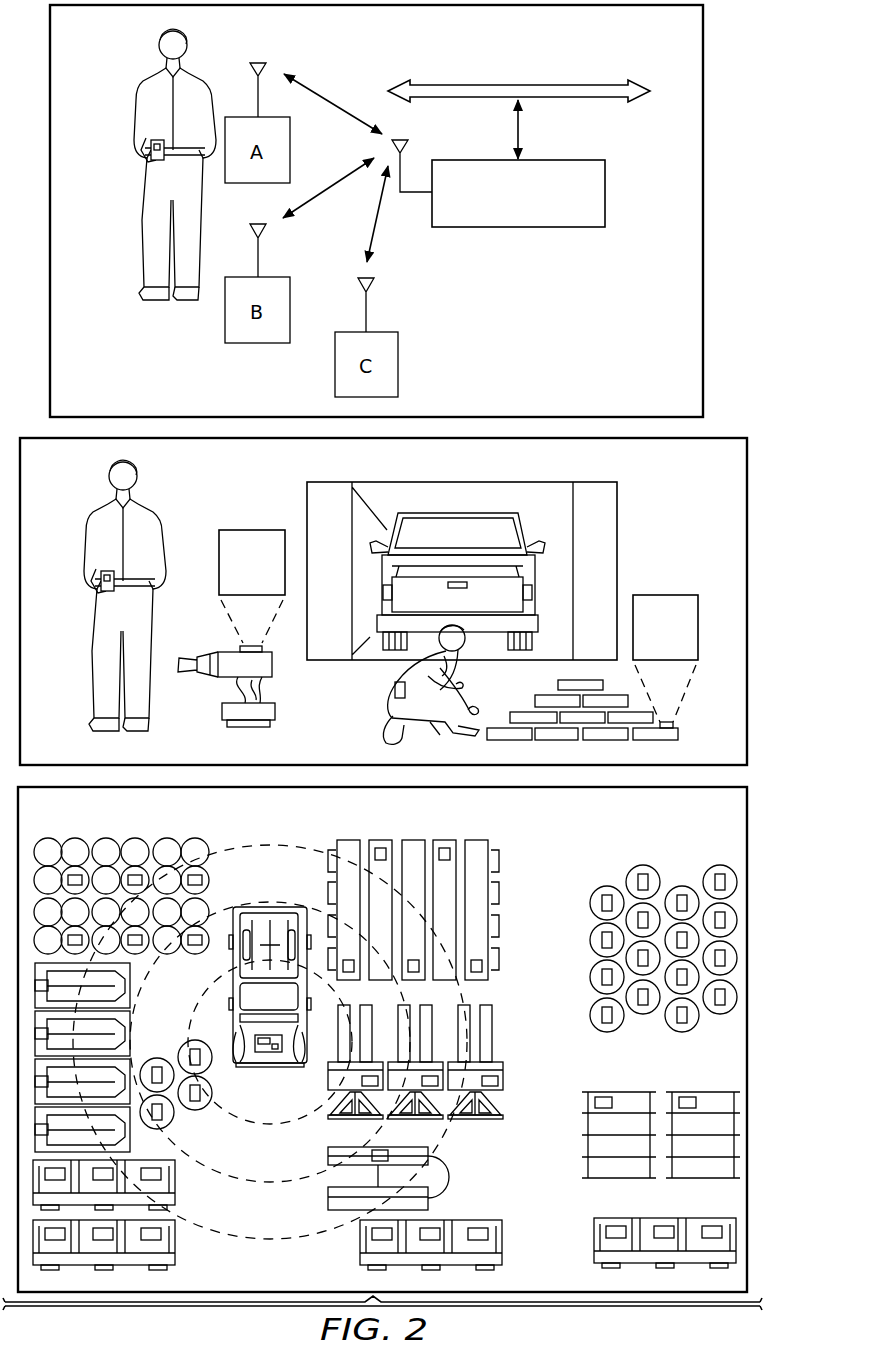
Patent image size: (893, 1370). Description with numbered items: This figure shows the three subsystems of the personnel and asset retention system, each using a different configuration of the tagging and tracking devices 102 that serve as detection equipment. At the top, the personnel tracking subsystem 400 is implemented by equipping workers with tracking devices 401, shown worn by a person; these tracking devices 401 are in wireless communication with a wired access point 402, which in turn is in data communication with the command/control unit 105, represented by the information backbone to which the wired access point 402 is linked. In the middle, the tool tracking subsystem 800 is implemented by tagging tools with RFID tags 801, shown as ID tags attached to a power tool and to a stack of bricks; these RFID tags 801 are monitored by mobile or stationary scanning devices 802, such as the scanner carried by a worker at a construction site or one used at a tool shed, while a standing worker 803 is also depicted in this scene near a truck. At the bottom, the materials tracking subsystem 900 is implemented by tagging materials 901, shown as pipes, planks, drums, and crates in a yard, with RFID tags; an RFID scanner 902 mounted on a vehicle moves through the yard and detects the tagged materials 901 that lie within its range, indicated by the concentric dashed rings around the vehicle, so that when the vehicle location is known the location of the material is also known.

The tagging and tracking devices 102 is at (765, 140).
The command/control unit 105 is at (606, 80).
The personnel tracking subsystem 400 is at (572, 358).
The tracking devices 401 is at (150, 164).
The wired access point 402 is at (606, 183).
The tool tracking subsystem 800 is at (702, 476).
The RFID tags 801 is at (250, 530).
The scanning devices 802 is at (388, 708).
The worker with tag 803 is at (100, 600).
The materials tracking subsystem 900 is at (558, 826).
The tagged materials 901 is at (644, 876).
The RFID scanner 902 is at (268, 1066).